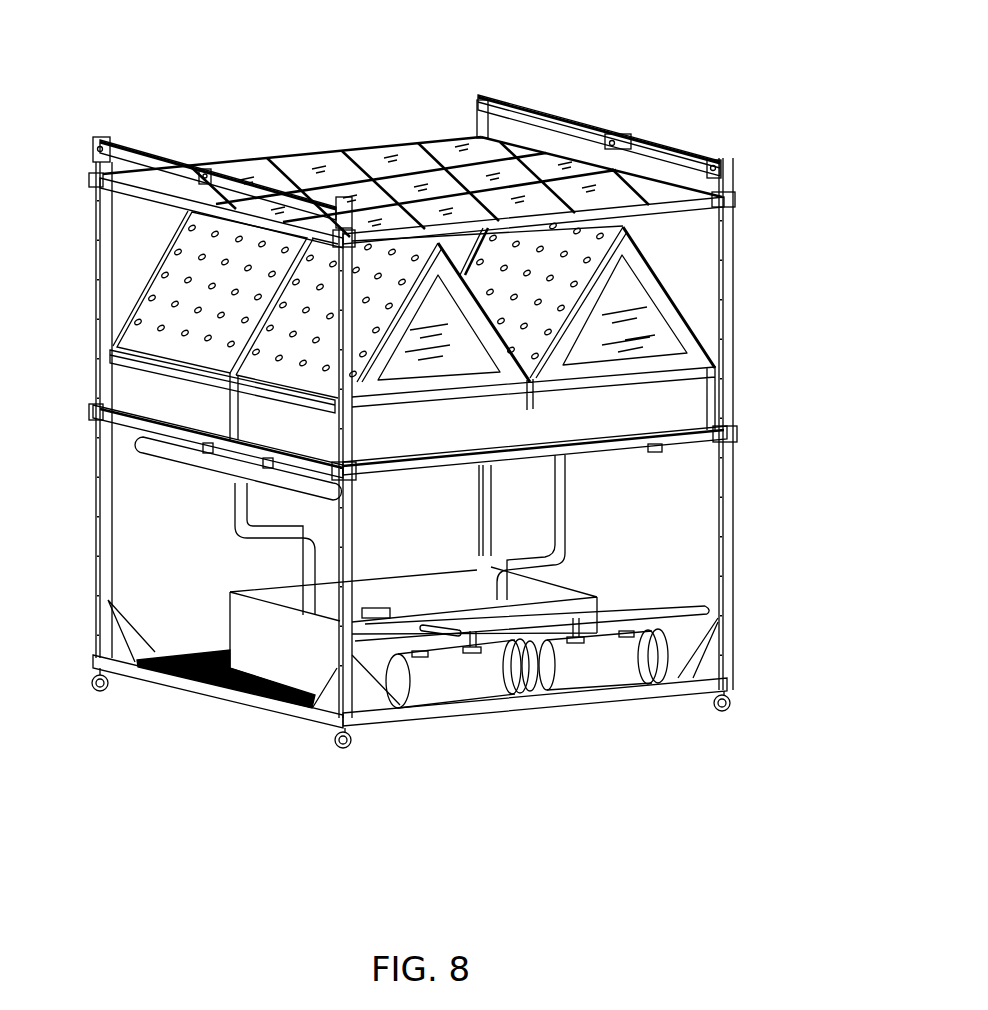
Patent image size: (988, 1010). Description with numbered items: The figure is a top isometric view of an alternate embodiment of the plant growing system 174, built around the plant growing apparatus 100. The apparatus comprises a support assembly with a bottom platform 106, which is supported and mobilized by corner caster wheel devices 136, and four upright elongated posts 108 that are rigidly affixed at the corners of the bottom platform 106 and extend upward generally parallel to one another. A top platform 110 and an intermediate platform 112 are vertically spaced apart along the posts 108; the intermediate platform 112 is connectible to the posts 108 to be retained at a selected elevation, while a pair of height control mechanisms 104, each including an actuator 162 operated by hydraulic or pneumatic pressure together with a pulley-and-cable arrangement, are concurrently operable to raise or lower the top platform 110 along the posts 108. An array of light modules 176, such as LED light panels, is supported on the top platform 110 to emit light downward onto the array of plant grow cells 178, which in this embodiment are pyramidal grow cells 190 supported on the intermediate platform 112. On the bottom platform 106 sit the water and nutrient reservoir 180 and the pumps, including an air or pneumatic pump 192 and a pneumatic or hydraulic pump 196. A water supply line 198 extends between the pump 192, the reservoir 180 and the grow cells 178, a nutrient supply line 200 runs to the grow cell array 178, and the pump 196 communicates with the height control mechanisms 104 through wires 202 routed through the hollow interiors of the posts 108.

The plant growing apparatus 100 is at (299, 125).
The height control mechanisms 104 is at (240, 173).
The bottom platform 106 is at (510, 722).
The elongated posts 108 is at (97, 497).
The top platform 110 is at (377, 136).
The intermediate platform 112 is at (612, 457).
The caster wheel devices 136 is at (106, 692).
The actuator 162 is at (741, 324).
The plant growing system 174 is at (620, 58).
The light modules 176 is at (457, 146).
The plant grow cells 178 is at (664, 267).
The water and nutrient reservoir 180 is at (300, 662).
The pyramidal grow cells 190 is at (678, 306).
The air or pneumatic pump 192 is at (437, 690).
The pneumatic or hydraulic pump 196 is at (590, 675).
The water supply line 198 is at (373, 610).
The nutrient supply line 200 is at (563, 510).
The wires 202 is at (572, 616).